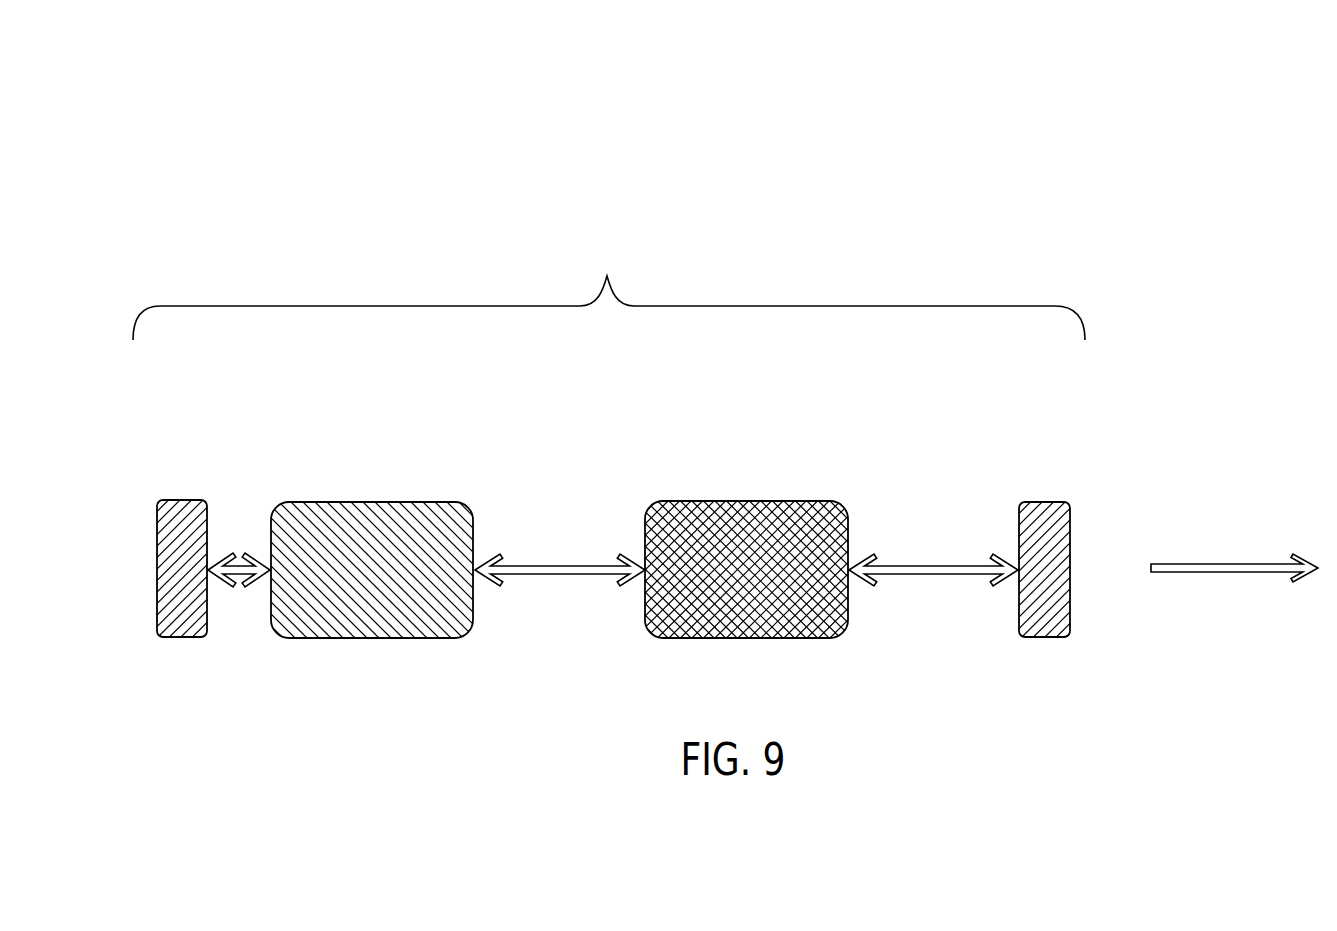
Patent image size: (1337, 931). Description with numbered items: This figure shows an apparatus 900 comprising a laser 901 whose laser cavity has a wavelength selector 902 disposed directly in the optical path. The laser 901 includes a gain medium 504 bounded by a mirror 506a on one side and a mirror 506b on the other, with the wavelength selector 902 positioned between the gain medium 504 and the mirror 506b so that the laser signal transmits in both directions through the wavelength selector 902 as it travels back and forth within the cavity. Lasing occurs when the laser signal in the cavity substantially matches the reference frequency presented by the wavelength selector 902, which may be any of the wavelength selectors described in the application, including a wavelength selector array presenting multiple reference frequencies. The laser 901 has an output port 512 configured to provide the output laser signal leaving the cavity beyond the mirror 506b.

The apparatus 900 is at (192, 194).
The laser 901 is at (609, 289).
The mirror 506a is at (183, 500).
The gain medium 504 is at (372, 520).
The wavelength selector 902 is at (747, 500).
The mirror 506b is at (1044, 502).
The output port 512 is at (1250, 564).